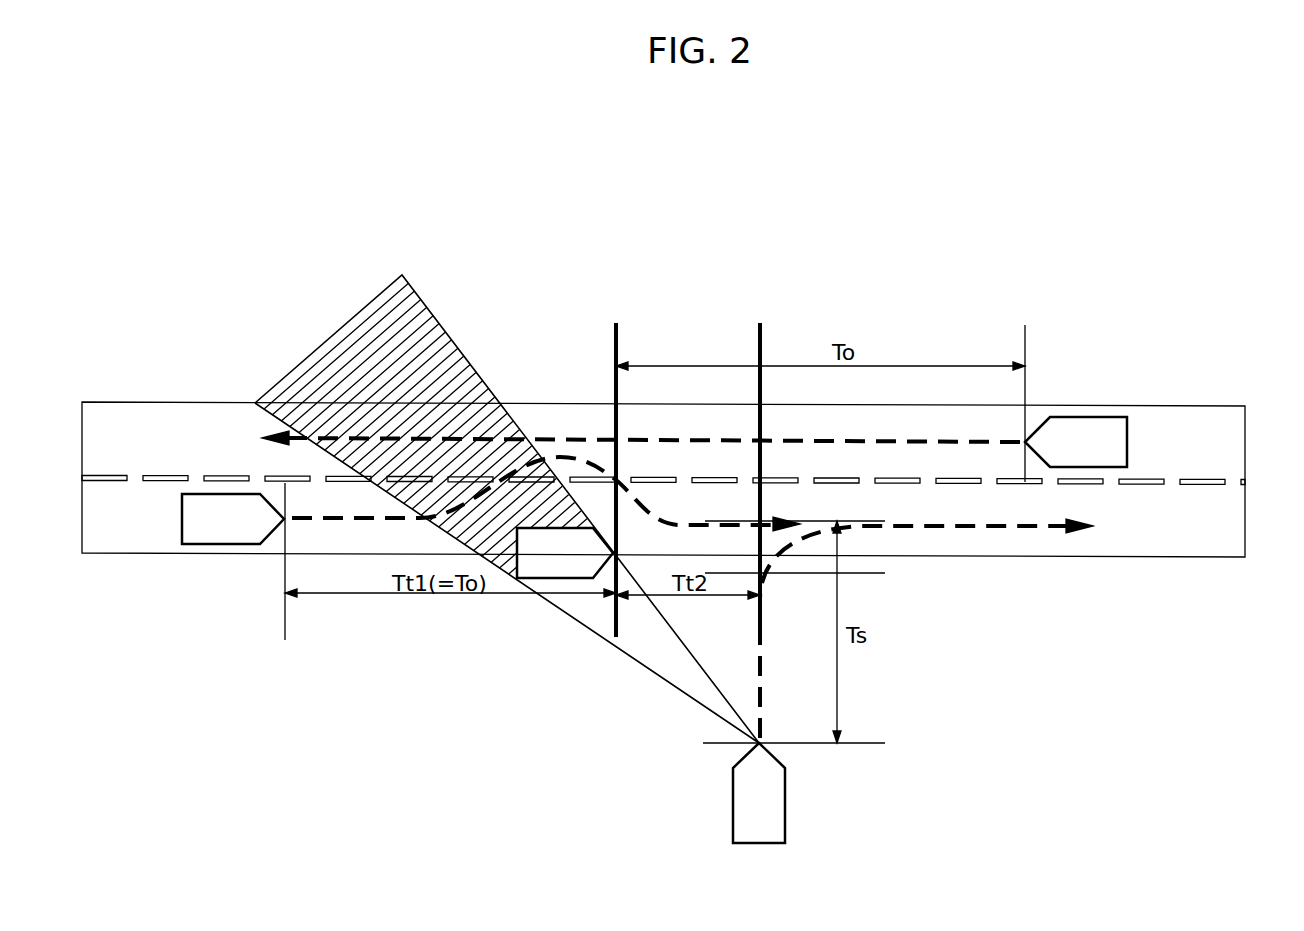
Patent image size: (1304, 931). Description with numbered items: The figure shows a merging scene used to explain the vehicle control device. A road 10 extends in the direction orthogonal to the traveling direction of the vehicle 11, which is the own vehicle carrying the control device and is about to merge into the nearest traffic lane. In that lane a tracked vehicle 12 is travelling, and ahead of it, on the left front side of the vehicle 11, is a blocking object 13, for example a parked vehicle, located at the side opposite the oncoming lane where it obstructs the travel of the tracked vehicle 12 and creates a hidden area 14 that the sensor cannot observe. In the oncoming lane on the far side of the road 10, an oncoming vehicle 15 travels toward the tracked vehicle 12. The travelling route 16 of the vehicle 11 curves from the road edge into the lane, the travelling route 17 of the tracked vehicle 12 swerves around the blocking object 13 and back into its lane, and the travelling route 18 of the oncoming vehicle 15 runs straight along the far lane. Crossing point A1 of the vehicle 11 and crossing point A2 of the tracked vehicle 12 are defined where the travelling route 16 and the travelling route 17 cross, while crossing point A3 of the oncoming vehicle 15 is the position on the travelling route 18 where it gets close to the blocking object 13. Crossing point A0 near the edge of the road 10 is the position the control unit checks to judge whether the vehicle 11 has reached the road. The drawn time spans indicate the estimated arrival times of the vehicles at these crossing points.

The road 10 is at (155, 401).
The vehicle 11 is at (785, 805).
The tracked vehicle 12 is at (218, 545).
The blocking object 13 is at (553, 580).
The hidden area 14 is at (462, 345).
The oncoming vehicle 15 is at (1094, 417).
The travelling route 16 is at (1040, 532).
The travelling route 17 is at (326, 522).
The travelling route 18 is at (544, 435).
The crossing point A0 is at (865, 573).
The crossing point A1 is at (816, 520).
The crossing point A2 is at (760, 323).
The crossing point A3 is at (616, 323).